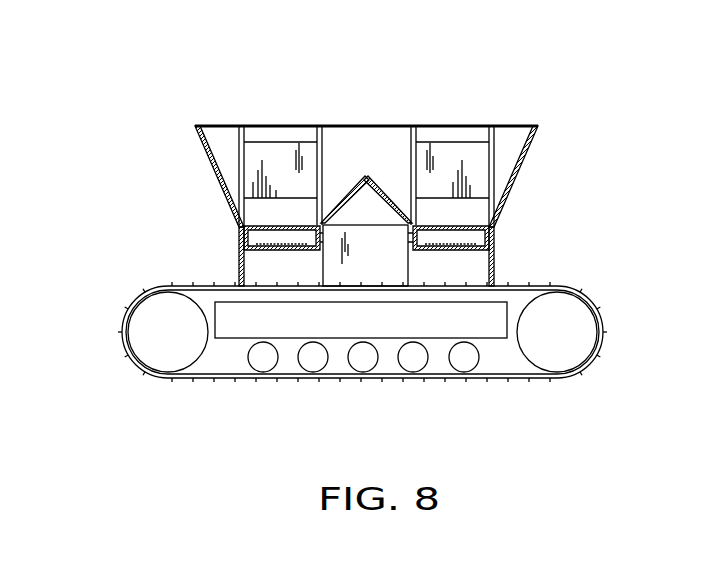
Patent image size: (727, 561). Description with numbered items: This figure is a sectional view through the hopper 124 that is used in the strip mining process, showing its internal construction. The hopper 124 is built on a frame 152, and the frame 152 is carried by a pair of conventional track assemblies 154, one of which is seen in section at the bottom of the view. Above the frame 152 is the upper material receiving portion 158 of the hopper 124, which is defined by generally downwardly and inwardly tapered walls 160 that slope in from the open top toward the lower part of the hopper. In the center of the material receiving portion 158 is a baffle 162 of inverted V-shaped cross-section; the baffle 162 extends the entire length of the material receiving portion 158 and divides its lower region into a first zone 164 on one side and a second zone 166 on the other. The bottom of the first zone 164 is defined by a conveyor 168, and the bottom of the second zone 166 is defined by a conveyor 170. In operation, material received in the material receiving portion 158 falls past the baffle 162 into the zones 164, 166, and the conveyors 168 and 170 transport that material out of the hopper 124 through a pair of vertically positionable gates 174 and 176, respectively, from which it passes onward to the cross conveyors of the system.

The hopper 124 is at (176, 118).
The frame 152 is at (233, 271).
The track assemblies 154 is at (132, 355).
The upper material receiving portion 158 is at (342, 160).
The tapered walls 160 is at (214, 126).
The baffle 162 is at (372, 176).
The first zone 164 is at (266, 160).
The second zone 166 is at (452, 158).
The conveyor 168 is at (265, 220).
The conveyor 170 is at (468, 220).
The gate 174 is at (283, 124).
The gate 176 is at (438, 124).